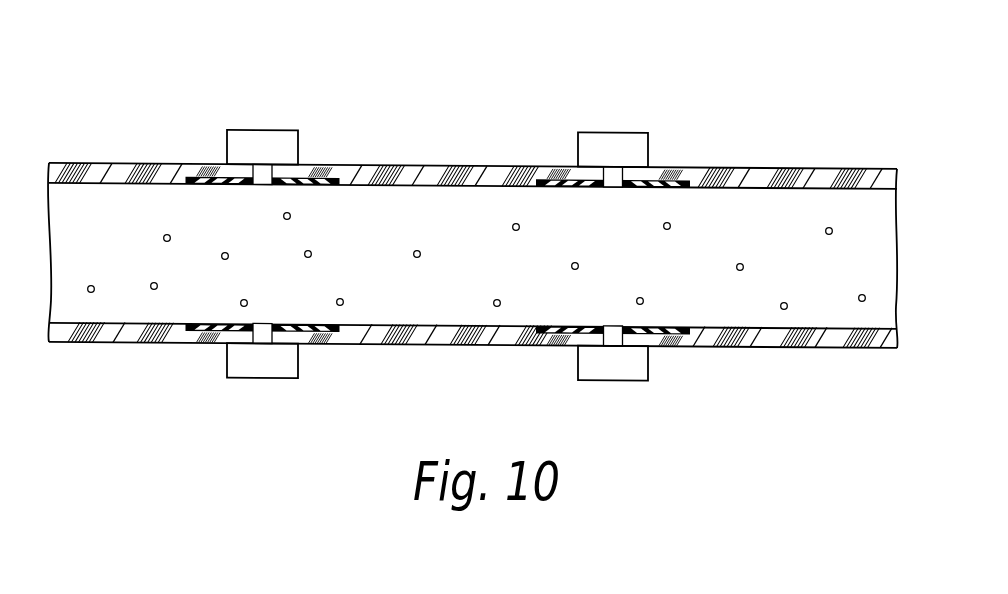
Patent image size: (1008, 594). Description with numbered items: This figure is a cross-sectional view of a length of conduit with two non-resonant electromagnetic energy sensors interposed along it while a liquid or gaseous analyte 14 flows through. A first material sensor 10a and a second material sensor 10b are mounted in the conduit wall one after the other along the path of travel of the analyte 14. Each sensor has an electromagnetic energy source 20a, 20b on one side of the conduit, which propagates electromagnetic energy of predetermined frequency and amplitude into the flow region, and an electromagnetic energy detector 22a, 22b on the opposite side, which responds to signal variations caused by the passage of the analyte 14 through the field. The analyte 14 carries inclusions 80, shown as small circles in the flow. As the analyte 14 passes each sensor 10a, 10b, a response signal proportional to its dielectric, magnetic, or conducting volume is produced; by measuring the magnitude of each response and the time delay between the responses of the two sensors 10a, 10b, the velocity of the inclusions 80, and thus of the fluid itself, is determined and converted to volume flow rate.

The first material sensor 10a is at (270, 90).
The second material sensor 10b is at (607, 108).
The analyte 14 is at (350, 207).
The electromagnetic energy source of first sensor 20a is at (240, 137).
The electromagnetic energy source of second sensor 20b is at (632, 143).
The electromagnetic energy detector of first sensor 22a is at (273, 367).
The electromagnetic energy detector of second sensor 22b is at (632, 368).
The inclusions 80 is at (417, 249).